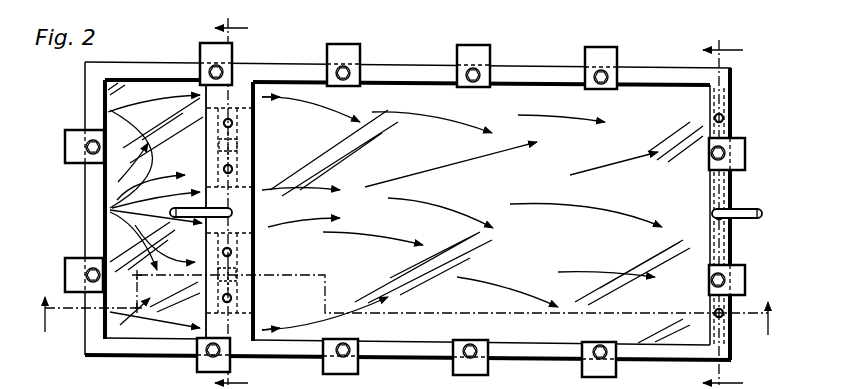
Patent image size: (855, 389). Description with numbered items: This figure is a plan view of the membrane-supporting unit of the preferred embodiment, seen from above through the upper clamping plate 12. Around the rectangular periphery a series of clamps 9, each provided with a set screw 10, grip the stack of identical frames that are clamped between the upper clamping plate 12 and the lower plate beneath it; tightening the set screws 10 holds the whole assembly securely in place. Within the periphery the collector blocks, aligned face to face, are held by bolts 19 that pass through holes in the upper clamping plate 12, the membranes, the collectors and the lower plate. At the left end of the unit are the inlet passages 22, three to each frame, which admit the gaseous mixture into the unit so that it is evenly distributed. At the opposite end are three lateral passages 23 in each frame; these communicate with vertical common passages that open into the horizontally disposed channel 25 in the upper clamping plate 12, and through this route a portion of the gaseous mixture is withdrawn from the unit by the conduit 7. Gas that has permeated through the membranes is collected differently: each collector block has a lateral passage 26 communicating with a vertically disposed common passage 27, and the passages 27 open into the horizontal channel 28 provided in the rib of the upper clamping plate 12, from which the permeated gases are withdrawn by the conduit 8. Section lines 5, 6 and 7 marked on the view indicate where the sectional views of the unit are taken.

The section line 5- 5 is at (407, 314).
The section line 6- 6 is at (238, 203).
The conduit 7 is at (755, 212).
The conduit 8 is at (176, 217).
The clamp 9 is at (65, 276).
The set screw 10 is at (601, 77).
The upper clamping plate 12 is at (282, 63).
The bolt 19 is at (233, 169).
The inlet passage 22 is at (105, 108).
The lateral passage 23 is at (710, 117).
The horizontally disposed channel 25 is at (722, 120).
The lateral passage 26 is at (205, 146).
The common passage 27 is at (228, 145).
The horizontal channel 28 is at (237, 192).